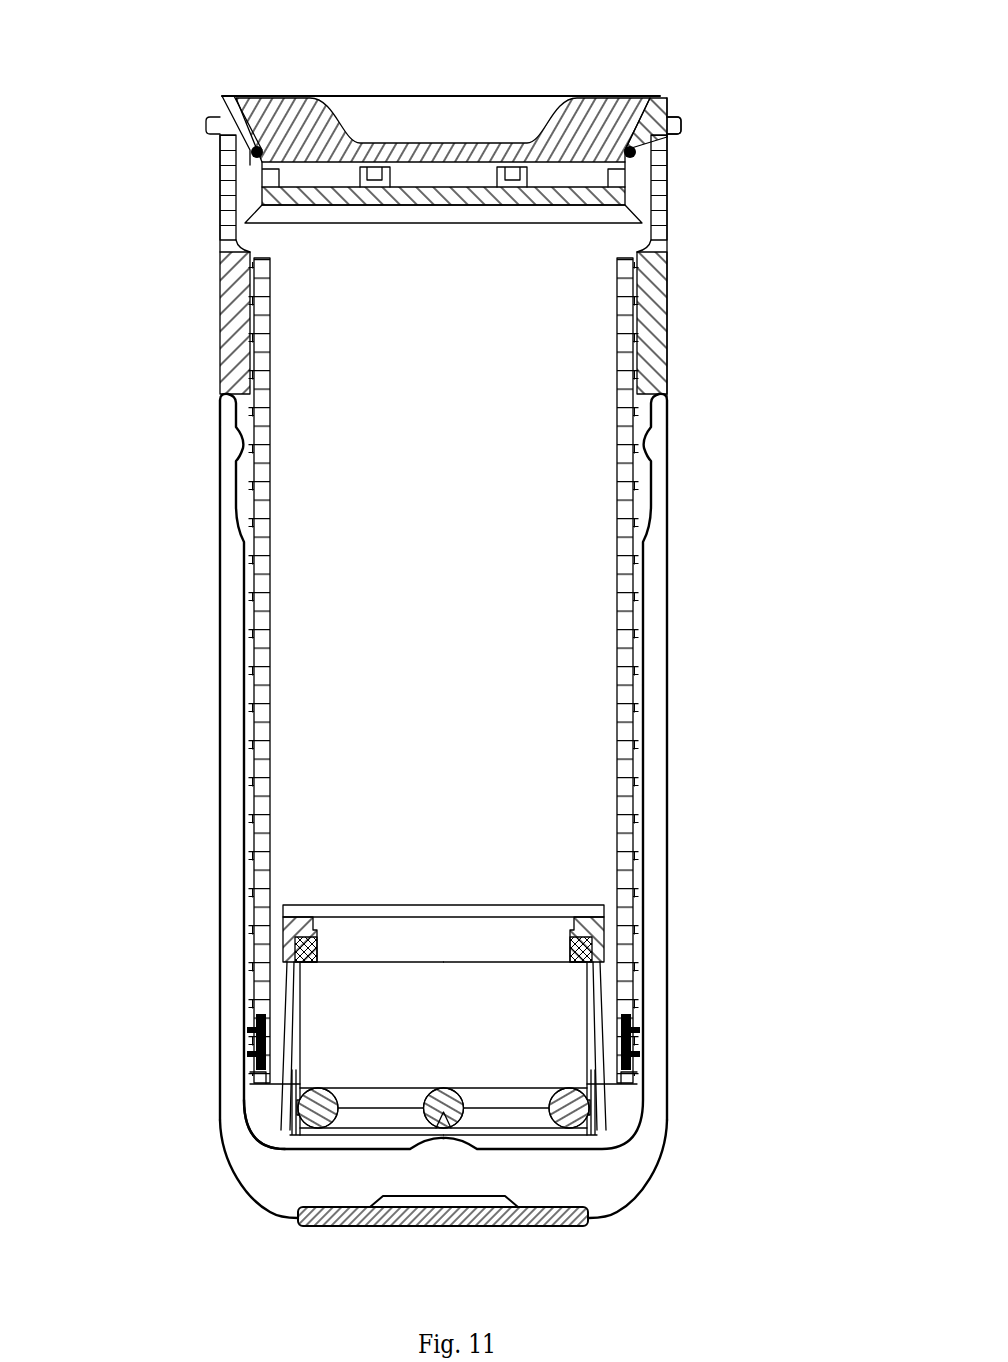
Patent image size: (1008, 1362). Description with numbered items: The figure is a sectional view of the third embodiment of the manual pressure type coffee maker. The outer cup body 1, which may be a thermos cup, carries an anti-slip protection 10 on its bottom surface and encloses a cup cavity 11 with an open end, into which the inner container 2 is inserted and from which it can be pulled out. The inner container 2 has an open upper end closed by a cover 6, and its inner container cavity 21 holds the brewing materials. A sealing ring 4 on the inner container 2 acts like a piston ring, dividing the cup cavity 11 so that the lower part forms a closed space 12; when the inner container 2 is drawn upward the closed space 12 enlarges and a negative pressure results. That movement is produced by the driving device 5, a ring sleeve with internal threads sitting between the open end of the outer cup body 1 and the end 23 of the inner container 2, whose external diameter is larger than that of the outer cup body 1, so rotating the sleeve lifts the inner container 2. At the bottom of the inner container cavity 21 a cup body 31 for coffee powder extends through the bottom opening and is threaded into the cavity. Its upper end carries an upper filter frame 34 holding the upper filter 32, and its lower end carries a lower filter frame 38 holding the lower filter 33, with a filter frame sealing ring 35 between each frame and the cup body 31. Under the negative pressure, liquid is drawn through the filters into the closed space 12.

The outer cup body 1 is at (650, 610).
The inner container 2 is at (622, 480).
The sealing ring 4 is at (255, 1035).
The driving device 5 is at (652, 322).
The cover 6 is at (262, 145).
The anti-slip protection 10 is at (330, 1220).
The cup cavity 11 is at (258, 610).
The closed space 12 is at (272, 1112).
The inner container cavity 21 is at (335, 492).
The end 23 is at (663, 190).
The cup body 31 is at (290, 1000).
The upper filter 32 is at (533, 920).
The lower filter 33 is at (520, 1105).
The upper filter frame 34 is at (290, 920).
The filter frame sealing ring 35 is at (600, 935).
The lower filter frame 38 is at (640, 1053).